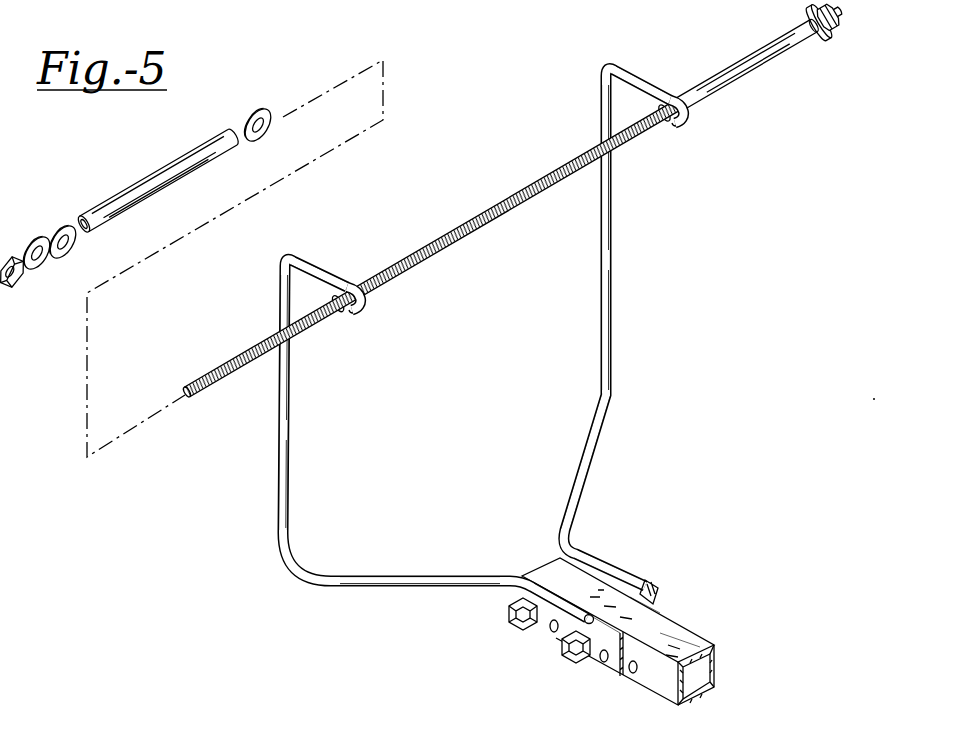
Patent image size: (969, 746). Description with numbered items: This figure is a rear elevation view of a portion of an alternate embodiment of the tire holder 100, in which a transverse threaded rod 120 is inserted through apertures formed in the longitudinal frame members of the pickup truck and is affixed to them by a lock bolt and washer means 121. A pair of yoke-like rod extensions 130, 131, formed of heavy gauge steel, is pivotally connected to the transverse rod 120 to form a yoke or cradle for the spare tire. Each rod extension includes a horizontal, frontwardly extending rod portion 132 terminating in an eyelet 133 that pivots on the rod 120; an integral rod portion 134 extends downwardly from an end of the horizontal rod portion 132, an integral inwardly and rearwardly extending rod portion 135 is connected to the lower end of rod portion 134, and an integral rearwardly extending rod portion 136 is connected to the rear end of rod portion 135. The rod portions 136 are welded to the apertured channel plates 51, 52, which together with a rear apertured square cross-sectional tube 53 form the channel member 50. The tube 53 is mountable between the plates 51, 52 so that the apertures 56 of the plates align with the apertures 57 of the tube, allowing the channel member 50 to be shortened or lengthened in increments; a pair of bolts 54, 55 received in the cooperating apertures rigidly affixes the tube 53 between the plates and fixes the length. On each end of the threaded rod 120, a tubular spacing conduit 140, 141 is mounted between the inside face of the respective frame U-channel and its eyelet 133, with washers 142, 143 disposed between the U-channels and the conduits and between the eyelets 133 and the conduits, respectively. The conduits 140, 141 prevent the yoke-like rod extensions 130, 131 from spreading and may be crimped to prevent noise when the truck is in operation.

The channel member 50 is at (716, 627).
The front apertured plate 51 is at (543, 633).
The front apertured plate 52 is at (663, 605).
The rear apertured square cross-sectional tube 53 is at (682, 623).
The bolt 54 is at (508, 614).
The bolt 55 is at (562, 647).
The aperture of plate 56 is at (602, 662).
The aperture of rear tube 57 is at (632, 678).
The tire holder 100 is at (374, 607).
The transverse threaded rod 120 is at (450, 226).
The lock bolt and washer means 121 is at (35, 240).
The yoke-like rod extension 130 is at (272, 506).
The yoke-like rod extension 131 is at (620, 336).
The horizontal frontwardly extending rod portion 132 is at (322, 265).
The eyelet 133 is at (360, 312).
The downwardly extending rod portion 134 is at (290, 462).
The inwardly and rearwardly extending rod portion 135 is at (358, 576).
The rearwardly extending rod portion 136 is at (545, 585).
The tubular spacing conduit 140 is at (132, 182).
The tubular spacing conduit 141 is at (743, 50).
The washer 142 is at (60, 220).
The washer 143 is at (248, 110).